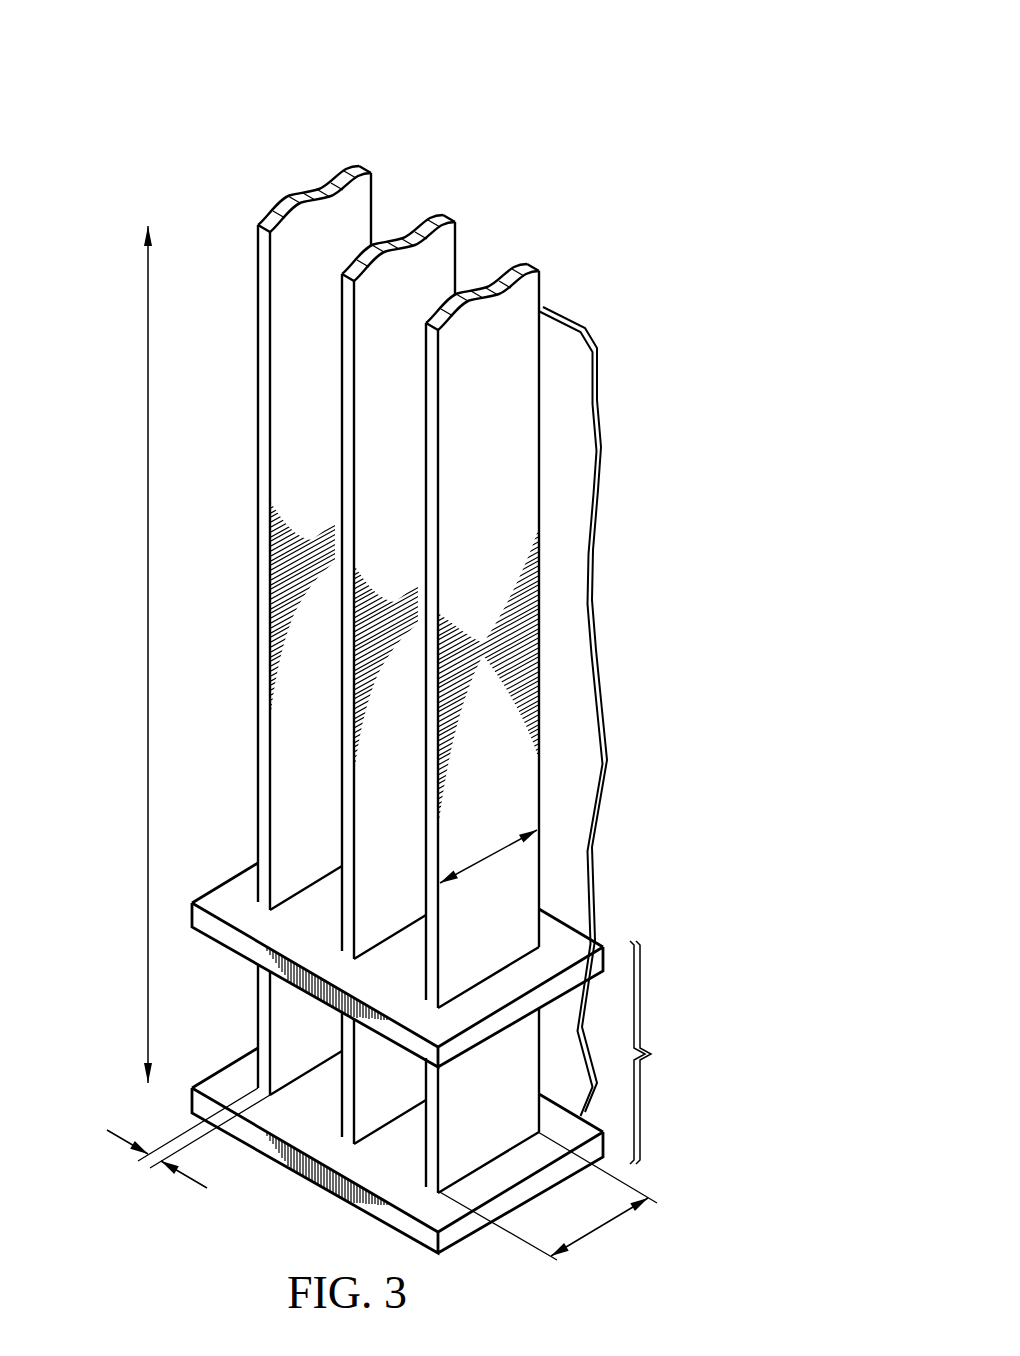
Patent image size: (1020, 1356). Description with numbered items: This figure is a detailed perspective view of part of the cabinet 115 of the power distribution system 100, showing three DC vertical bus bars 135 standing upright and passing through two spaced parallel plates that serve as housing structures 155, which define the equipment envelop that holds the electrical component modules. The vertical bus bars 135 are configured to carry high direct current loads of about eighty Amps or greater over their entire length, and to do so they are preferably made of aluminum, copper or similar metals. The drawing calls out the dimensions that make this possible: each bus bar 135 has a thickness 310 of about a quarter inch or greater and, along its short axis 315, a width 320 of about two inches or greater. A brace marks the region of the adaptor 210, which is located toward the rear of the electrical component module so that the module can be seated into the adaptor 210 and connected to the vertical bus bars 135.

The power distribution system 100 is at (601, 61).
The cabinet 115 is at (602, 464).
The DC vertical bus bars 135 is at (257, 564).
The housing structures 155 is at (148, 657).
The adaptor 210 is at (665, 1052).
The thickness 310 is at (107, 1130).
The short axis 315 is at (478, 864).
The width 320 is at (596, 1228).